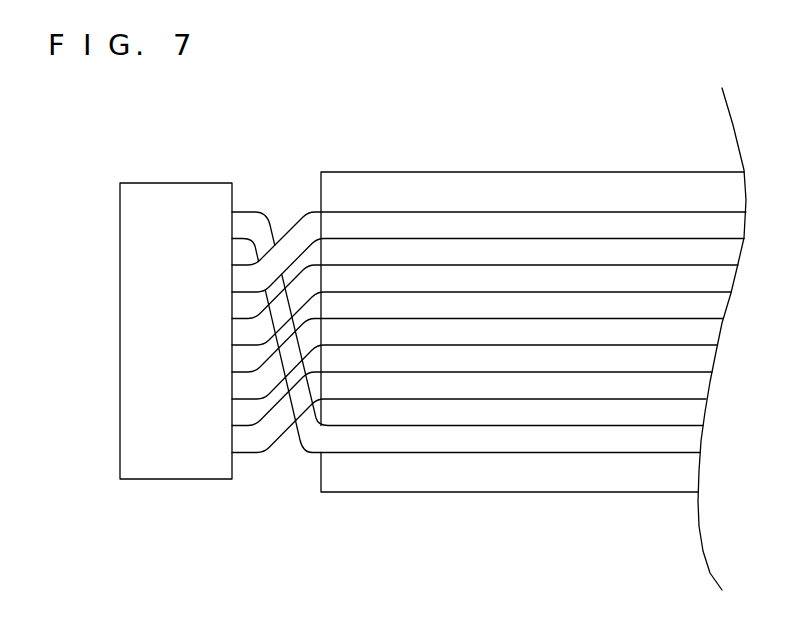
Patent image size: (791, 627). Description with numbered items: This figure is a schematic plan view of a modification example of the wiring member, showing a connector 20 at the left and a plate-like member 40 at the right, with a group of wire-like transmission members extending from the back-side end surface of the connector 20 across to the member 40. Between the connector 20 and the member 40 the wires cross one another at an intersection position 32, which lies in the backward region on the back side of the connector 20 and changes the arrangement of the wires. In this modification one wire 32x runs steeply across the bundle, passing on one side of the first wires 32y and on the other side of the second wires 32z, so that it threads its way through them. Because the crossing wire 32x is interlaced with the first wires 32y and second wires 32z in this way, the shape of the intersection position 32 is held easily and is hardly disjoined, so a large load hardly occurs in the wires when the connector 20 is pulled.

The connector 20 is at (168, 476).
The intersection position 32 is at (489, 286).
The first wiring portion 32x is at (247, 222).
The second wiring portion 32y is at (373, 333).
The third wiring portion 32z is at (445, 380).
The circuit board 40 is at (462, 481).